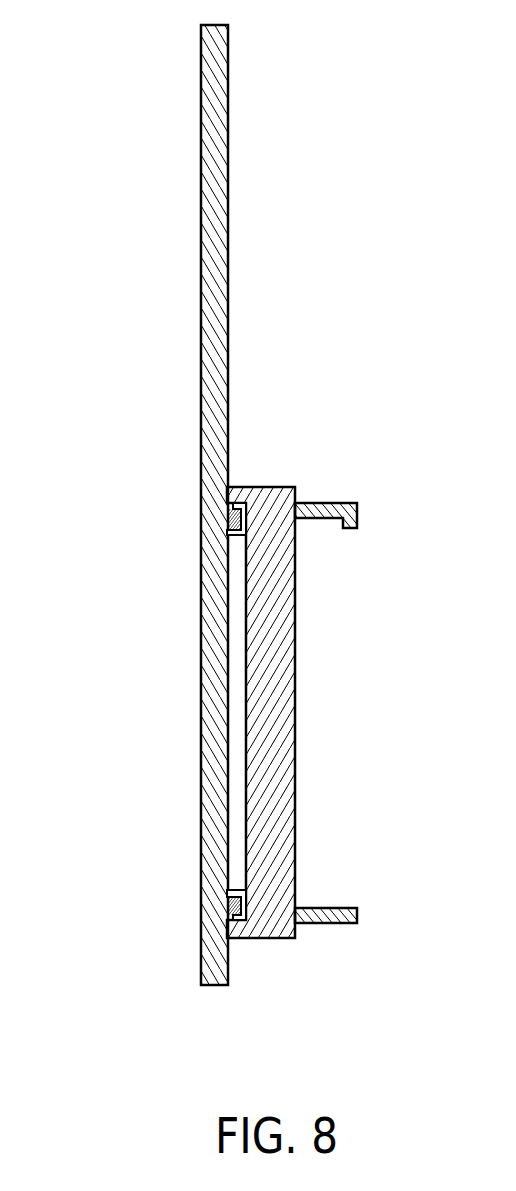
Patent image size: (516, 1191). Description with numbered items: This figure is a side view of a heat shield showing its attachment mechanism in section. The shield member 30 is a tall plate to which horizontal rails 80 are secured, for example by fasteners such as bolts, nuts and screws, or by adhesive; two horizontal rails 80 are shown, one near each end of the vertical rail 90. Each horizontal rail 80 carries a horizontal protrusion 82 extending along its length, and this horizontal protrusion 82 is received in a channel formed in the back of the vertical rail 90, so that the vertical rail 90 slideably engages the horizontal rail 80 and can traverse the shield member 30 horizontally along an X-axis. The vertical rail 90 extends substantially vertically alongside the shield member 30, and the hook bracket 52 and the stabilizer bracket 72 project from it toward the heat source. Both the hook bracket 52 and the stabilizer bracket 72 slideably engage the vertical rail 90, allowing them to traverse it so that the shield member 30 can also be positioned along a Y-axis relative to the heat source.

The shield member 30 is at (215, 343).
The vertical rail 90 is at (274, 522).
The hook bracket 52 is at (350, 517).
The stabilizer bracket 72 is at (332, 918).
The horizontal rail 80 is at (240, 527).
The horizontal protrusion 82 is at (240, 508).